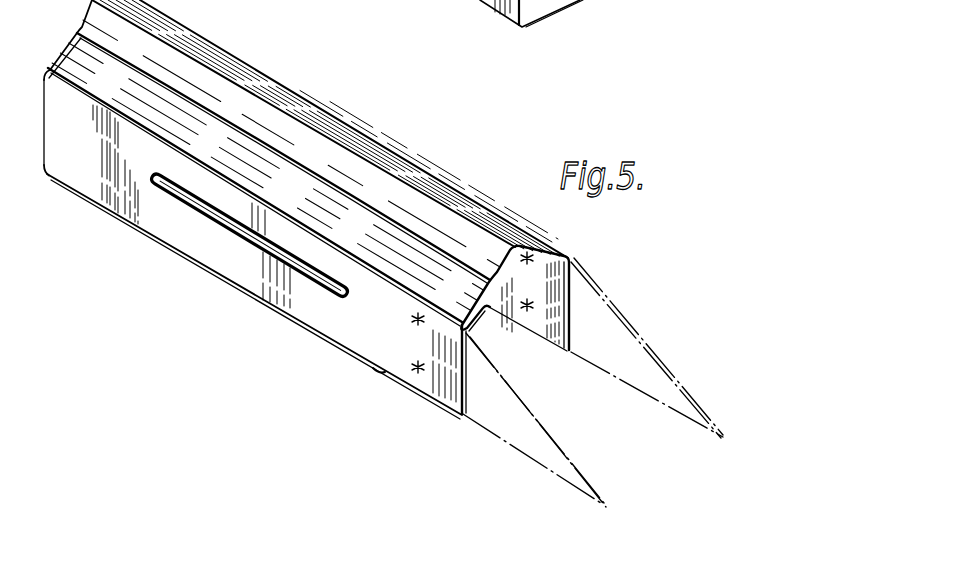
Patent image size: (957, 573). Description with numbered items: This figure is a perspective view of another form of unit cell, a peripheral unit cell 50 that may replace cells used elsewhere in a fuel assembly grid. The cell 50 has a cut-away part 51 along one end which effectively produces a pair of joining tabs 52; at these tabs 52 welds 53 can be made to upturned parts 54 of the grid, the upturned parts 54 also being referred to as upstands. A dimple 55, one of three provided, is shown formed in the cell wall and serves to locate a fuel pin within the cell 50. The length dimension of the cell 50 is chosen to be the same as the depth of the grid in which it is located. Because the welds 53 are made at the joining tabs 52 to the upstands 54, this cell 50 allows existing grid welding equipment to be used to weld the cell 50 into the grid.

The peripheral unit cell 50 is at (158, 214).
The cut-away part 51 is at (412, 388).
The joining tabs 52 is at (466, 412).
The welds 53 is at (414, 327).
The upturned parts 54 is at (530, 443).
The dimple 55 is at (232, 220).